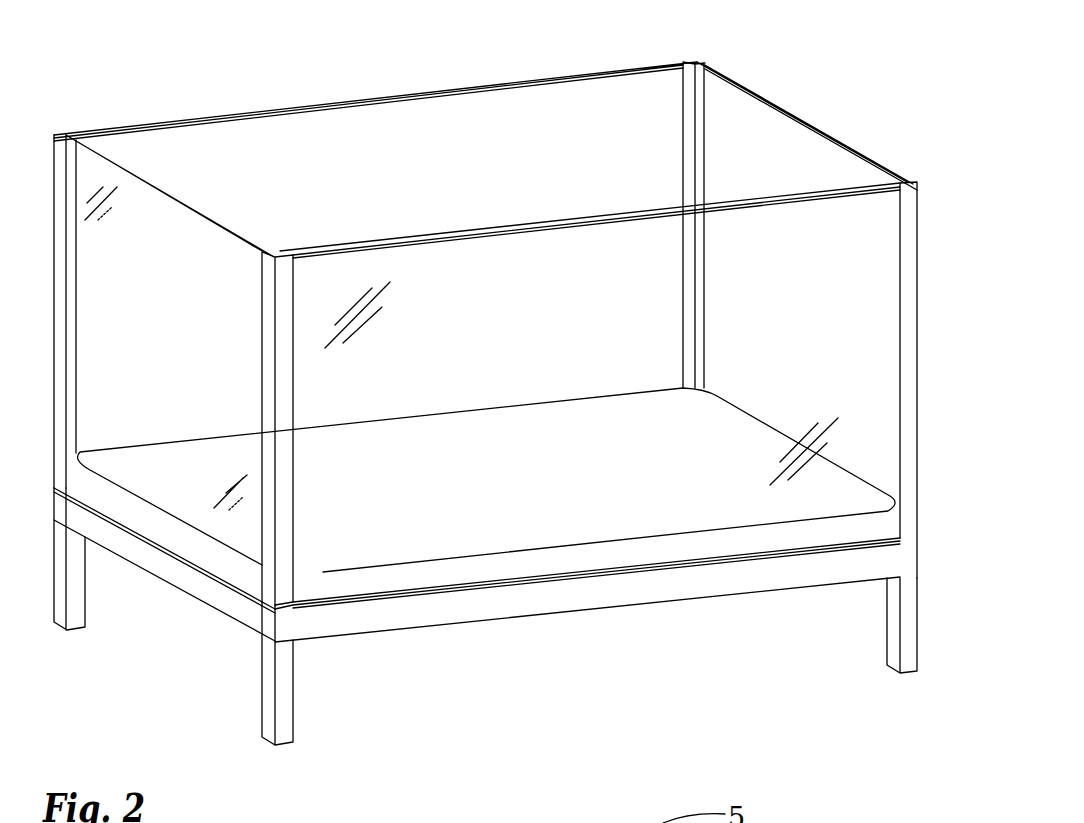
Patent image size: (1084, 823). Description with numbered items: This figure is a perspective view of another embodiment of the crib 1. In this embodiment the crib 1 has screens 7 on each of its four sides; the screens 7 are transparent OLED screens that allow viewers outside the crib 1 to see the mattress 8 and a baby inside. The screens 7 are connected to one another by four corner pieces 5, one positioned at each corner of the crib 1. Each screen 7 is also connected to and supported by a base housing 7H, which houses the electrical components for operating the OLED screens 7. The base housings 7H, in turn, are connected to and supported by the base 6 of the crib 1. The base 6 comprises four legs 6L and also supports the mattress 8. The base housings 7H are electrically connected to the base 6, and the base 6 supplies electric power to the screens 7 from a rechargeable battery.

The crib 1 is at (913, 137).
The corner piece 5 is at (295, 528).
The base 6 is at (683, 598).
The leg 6L is at (262, 680).
The screen 7 is at (212, 116).
The base housing 7H is at (818, 552).
The mattress 8 is at (747, 438).